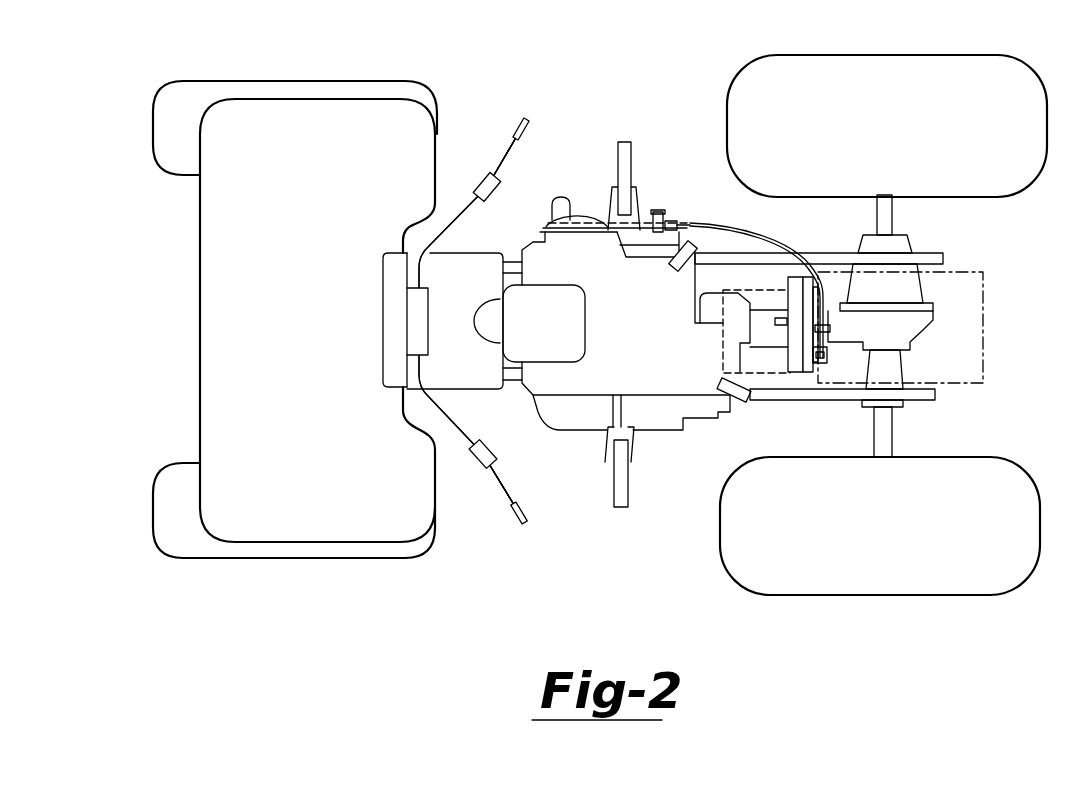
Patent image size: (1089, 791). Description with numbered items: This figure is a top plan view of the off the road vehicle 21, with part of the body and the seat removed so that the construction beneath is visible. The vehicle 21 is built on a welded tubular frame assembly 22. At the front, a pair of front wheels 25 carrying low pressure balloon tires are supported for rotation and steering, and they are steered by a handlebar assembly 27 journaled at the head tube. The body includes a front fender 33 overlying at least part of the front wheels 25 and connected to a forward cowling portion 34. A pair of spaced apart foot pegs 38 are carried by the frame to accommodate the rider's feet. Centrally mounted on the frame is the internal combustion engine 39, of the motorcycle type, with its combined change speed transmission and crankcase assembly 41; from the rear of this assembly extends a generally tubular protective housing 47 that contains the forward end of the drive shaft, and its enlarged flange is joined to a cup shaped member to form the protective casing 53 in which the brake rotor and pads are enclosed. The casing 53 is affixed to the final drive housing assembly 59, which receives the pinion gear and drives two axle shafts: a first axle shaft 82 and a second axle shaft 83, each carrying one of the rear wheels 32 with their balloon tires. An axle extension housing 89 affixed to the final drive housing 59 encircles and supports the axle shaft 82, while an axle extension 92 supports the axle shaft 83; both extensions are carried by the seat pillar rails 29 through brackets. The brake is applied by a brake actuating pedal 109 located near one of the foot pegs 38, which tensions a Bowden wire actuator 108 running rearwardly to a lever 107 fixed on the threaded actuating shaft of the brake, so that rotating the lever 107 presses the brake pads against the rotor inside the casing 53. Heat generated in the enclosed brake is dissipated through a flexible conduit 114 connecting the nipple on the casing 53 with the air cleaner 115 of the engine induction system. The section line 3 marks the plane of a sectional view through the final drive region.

The section line 3 is at (997, 343).
The off the road vehicle 21 is at (581, 141).
The frame assembly 22 is at (818, 254).
The front wheels 25 is at (161, 131).
The handlebar assembly 27 is at (458, 207).
The seat pillar rails 29 is at (945, 262).
The rear wheels 32 is at (940, 60).
The front fender 33 is at (205, 345).
The forward cowling portion 34 is at (385, 357).
The foot pegs 38 is at (632, 168).
The internal combustion engine 39 is at (575, 324).
The change speed transmission, crankcase assembly 41 is at (535, 383).
The protective housing 47 is at (762, 320).
The protective casing 53 is at (795, 372).
The final drive housing assembly 59 is at (928, 312).
The first axle shaft 82 is at (893, 440).
The second axle shaft 83 is at (895, 212).
The axle extension housing 89 is at (895, 372).
The axle extension 92 is at (908, 244).
The lever 107 is at (828, 362).
The Bowden wire actuator 108 is at (748, 236).
The brake actuating pedal 109 is at (566, 213).
The flexible conduit 114 is at (775, 328).
The air cleaner 115 is at (768, 375).